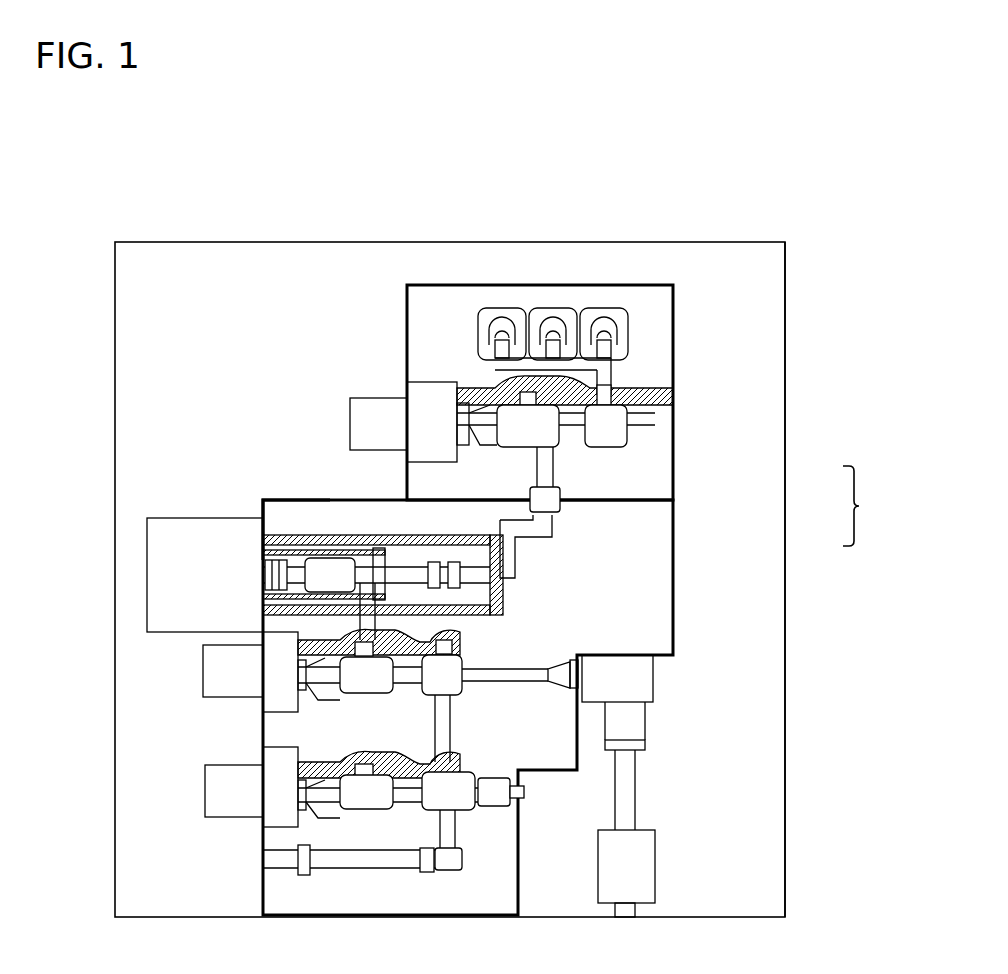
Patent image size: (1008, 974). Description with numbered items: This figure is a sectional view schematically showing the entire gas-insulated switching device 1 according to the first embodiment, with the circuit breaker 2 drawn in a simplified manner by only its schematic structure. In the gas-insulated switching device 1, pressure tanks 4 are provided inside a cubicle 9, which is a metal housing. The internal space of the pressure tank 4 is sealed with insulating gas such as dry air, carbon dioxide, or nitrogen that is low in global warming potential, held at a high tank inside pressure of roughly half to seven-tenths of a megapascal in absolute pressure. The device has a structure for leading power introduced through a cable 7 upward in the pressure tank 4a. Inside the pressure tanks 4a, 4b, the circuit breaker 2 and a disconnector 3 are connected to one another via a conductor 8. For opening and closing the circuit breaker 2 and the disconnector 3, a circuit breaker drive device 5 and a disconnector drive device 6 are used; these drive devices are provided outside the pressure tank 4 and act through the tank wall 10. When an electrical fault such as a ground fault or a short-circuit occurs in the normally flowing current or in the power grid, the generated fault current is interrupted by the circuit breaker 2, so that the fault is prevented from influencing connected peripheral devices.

The gas-insulated switching device 1 is at (662, 222).
The circuit breaker 2 is at (328, 520).
The disconnector 3 is at (568, 462).
The pressure tank 4 is at (866, 506).
The pressure tank 4a is at (673, 470).
The pressure tank 4b is at (673, 560).
The circuit breaker drive device 5 is at (160, 553).
The disconnector drive device 6 is at (370, 420).
The cable 7 is at (622, 727).
The conductor 8 is at (508, 556).
The cubicle 9 is at (785, 400).
The tank wall 10 is at (258, 508).